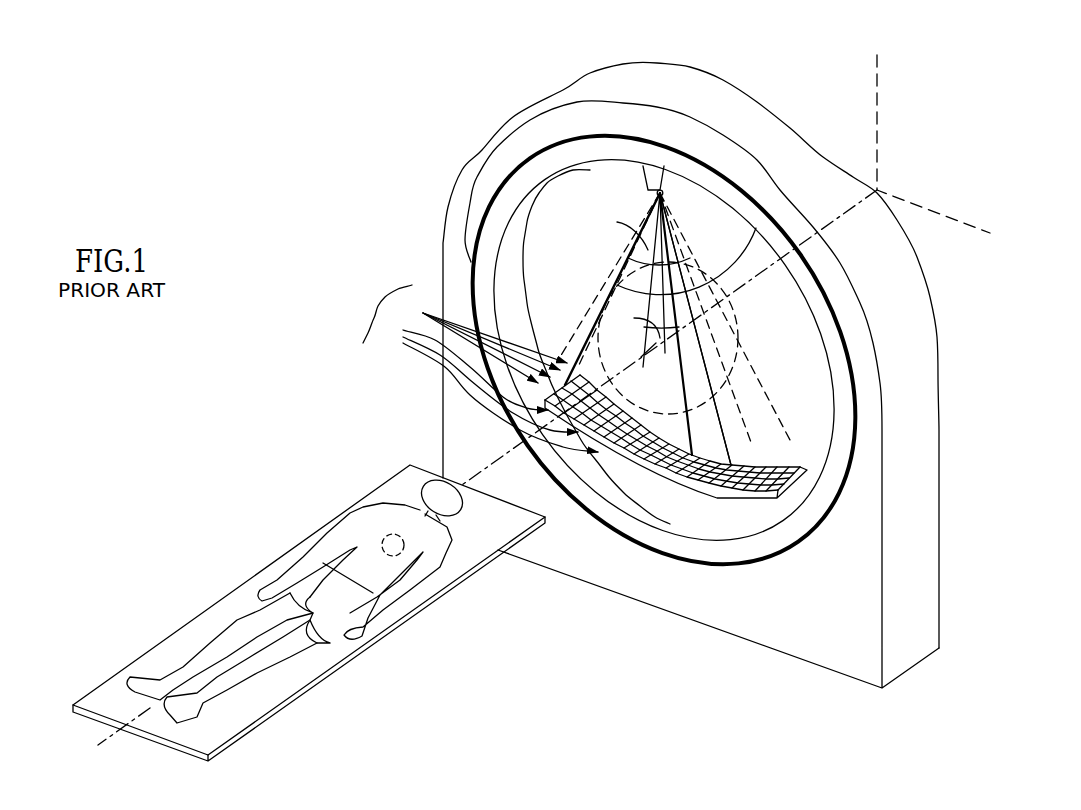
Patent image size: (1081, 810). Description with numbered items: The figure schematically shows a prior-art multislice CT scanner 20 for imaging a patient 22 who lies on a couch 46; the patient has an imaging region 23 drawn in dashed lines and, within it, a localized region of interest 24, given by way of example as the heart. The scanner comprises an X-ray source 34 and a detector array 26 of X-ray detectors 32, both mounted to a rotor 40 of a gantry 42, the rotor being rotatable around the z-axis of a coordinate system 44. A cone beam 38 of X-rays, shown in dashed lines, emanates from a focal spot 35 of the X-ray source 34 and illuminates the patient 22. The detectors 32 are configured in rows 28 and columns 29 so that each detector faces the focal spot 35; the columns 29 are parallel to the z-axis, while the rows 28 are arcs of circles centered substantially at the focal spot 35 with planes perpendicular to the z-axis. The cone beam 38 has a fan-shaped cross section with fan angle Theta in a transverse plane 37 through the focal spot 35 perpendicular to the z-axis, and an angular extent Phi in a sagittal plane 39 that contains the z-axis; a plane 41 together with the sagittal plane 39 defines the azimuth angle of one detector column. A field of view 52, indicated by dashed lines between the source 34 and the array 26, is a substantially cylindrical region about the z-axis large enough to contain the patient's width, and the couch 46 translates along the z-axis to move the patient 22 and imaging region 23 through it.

The multislice CT scanner 20 is at (398, 110).
The patient 22 is at (262, 533).
The imaging region 23 is at (327, 563).
The localized region of interest 24 is at (400, 550).
The detector array 26 is at (380, 313).
The rows 28 is at (482, 339).
The columns 29 is at (486, 387).
The X-ray detectors 32 is at (675, 470).
The X-ray source 34 is at (647, 182).
The focal spot 35 is at (650, 193).
The transverse plane 37 is at (695, 205).
The cone beam 38 is at (588, 320).
The sagittal plane 39 is at (757, 265).
The rotor 40 is at (710, 550).
The plane 41 is at (707, 432).
The gantry 42 is at (836, 619).
The coordinate system 44 is at (945, 146).
The couch 46 is at (130, 663).
The field of view 52 is at (653, 418).